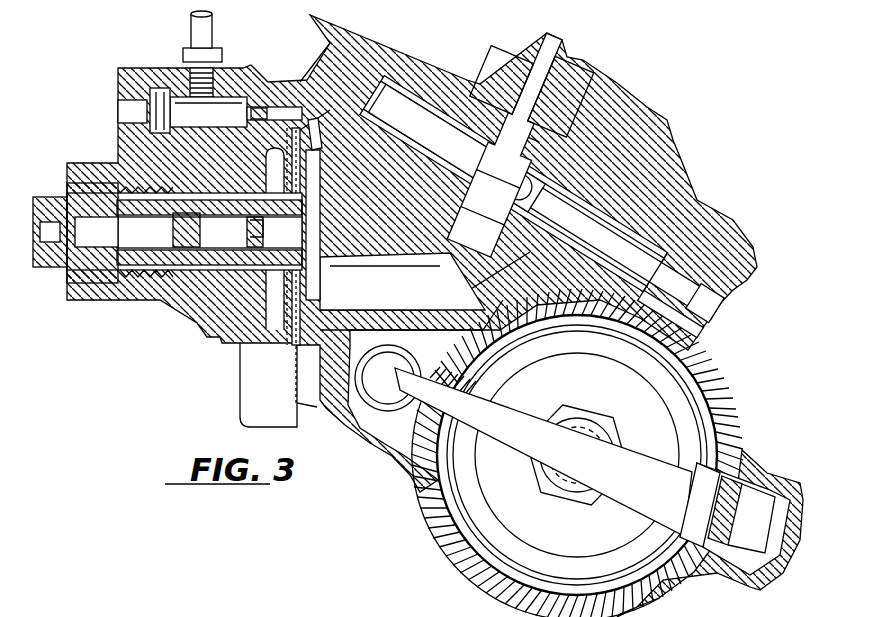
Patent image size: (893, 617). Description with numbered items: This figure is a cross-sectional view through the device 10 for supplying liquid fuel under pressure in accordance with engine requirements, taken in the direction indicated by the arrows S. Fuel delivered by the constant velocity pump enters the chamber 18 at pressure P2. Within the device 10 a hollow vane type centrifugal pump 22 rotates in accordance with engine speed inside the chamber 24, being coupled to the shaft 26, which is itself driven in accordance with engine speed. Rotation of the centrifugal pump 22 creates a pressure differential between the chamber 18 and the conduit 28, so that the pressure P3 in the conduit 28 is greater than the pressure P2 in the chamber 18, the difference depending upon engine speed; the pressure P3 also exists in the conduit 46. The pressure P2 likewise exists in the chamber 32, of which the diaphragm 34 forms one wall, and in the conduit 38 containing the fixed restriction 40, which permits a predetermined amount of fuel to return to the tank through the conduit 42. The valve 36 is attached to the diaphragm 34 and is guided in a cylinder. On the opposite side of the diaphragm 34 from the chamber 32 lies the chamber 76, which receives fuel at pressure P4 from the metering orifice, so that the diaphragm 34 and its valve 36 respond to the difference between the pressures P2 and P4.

The device 10 is at (128, 302).
The chamber 18 is at (440, 302).
The hollow vane type centrifugal pump 22 is at (408, 85).
The chamber 24 is at (367, 130).
The shaft 26 is at (586, 88).
The conduit 28 is at (690, 330).
The chamber 32 is at (318, 182).
The diaphragm 34 is at (285, 310).
The valve 36 is at (170, 273).
The conduit 38 is at (322, 142).
The fixed restriction 40 is at (262, 107).
The conduit 42 is at (193, 28).
The conduit 46 is at (708, 315).
The chamber 76 is at (275, 170).
The pressure P2 is at (390, 272).
The pressure P3 is at (563, 312).
The pressure P4 is at (263, 288).
The section direction S is at (350, 348).